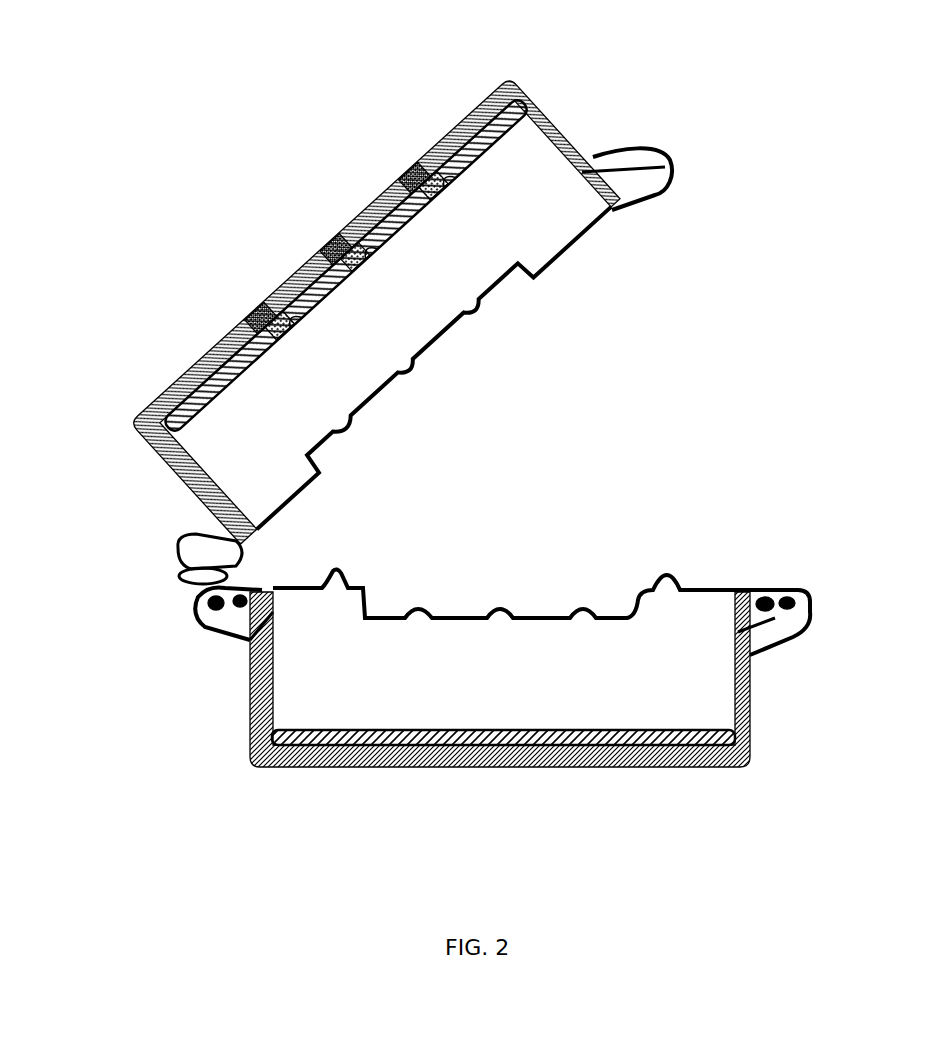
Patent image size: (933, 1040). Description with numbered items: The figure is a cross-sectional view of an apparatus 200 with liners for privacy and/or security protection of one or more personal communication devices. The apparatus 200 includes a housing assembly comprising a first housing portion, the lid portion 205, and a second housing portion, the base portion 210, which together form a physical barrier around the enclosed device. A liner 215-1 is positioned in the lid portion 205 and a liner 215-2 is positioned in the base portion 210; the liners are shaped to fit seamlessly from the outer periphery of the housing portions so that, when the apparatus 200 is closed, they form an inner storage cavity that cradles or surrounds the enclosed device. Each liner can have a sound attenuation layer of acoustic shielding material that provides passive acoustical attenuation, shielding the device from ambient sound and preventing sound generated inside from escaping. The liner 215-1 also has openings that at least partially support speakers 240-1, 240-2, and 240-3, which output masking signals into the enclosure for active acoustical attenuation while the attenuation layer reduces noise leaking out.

The apparatus 200 is at (790, 174).
The lid portion 205 is at (182, 383).
The base portion 210 is at (316, 762).
The liner 215-1 is at (500, 130).
The liner 215-2 is at (462, 718).
The speaker 240-1 is at (282, 332).
The speaker 240-2 is at (348, 272).
The speaker 240-3 is at (426, 203).